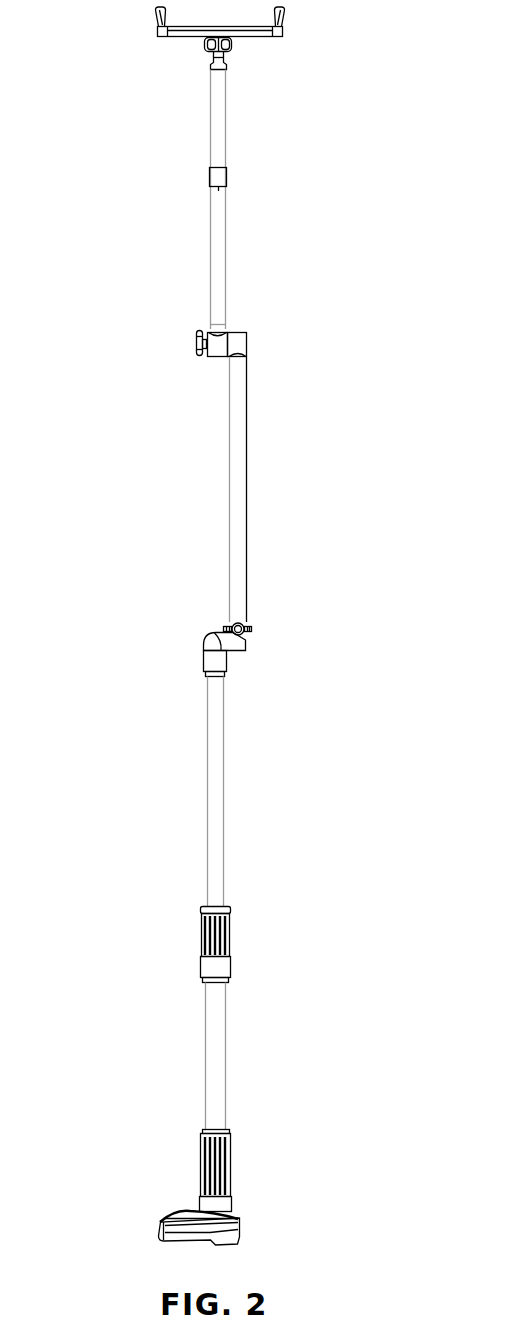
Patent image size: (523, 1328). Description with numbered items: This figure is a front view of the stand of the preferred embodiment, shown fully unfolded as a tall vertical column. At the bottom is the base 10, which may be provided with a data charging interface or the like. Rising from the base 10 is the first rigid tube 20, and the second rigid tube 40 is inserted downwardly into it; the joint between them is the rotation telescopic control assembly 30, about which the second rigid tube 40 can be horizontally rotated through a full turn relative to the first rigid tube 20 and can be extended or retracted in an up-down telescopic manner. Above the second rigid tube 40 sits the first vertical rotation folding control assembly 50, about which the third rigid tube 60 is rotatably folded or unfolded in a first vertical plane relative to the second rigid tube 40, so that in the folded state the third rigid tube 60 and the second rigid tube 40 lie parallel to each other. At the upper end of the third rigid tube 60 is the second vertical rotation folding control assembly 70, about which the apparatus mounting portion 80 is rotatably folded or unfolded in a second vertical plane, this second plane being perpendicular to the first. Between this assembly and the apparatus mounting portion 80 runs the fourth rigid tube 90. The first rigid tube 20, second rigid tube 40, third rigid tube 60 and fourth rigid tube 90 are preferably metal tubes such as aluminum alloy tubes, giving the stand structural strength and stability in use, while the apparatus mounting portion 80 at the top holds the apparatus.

The base 10 is at (158, 1224).
The first rigid tube 20 is at (205, 1078).
The rotation telescopic control assembly 30 is at (200, 952).
The second rigid tube 40 is at (207, 776).
The first vertical rotation folding control assembly 50 is at (203, 650).
The third rigid tube 60 is at (229, 506).
The second vertical rotation folding control assembly 70 is at (196, 346).
The apparatus mounting portion 80 is at (157, 36).
The fourth rigid tube 90 is at (210, 238).